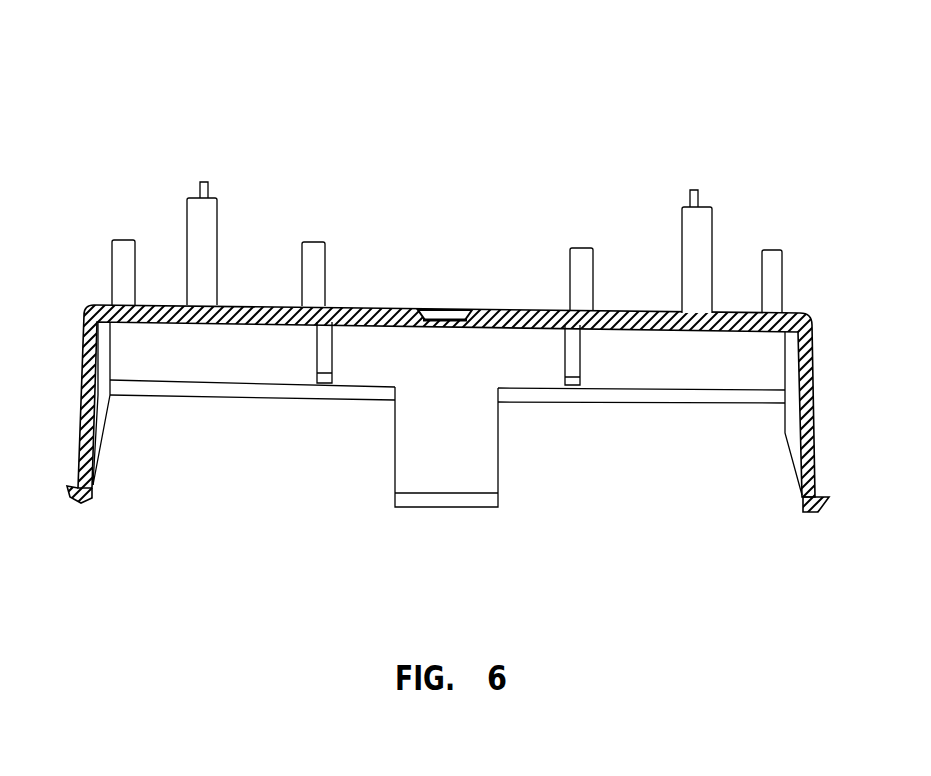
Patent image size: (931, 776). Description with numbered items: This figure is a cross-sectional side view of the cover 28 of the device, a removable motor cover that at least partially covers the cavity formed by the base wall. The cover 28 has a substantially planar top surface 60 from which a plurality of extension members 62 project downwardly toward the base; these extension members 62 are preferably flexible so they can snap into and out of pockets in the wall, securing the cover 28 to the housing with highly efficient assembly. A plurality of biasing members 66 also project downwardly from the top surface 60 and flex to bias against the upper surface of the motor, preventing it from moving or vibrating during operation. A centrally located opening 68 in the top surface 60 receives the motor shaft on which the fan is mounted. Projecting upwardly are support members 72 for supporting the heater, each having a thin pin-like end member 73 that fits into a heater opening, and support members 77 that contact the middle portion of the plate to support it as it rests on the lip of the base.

The cover 28 is at (473, 97).
The top surface 60 is at (638, 312).
The extension members 62 is at (75, 504).
The biasing members 66 is at (563, 353).
The centrally located opening 68 is at (446, 312).
The support members 72 is at (187, 200).
The pin-like end members 73 is at (208, 181).
The support members 77 is at (112, 238).